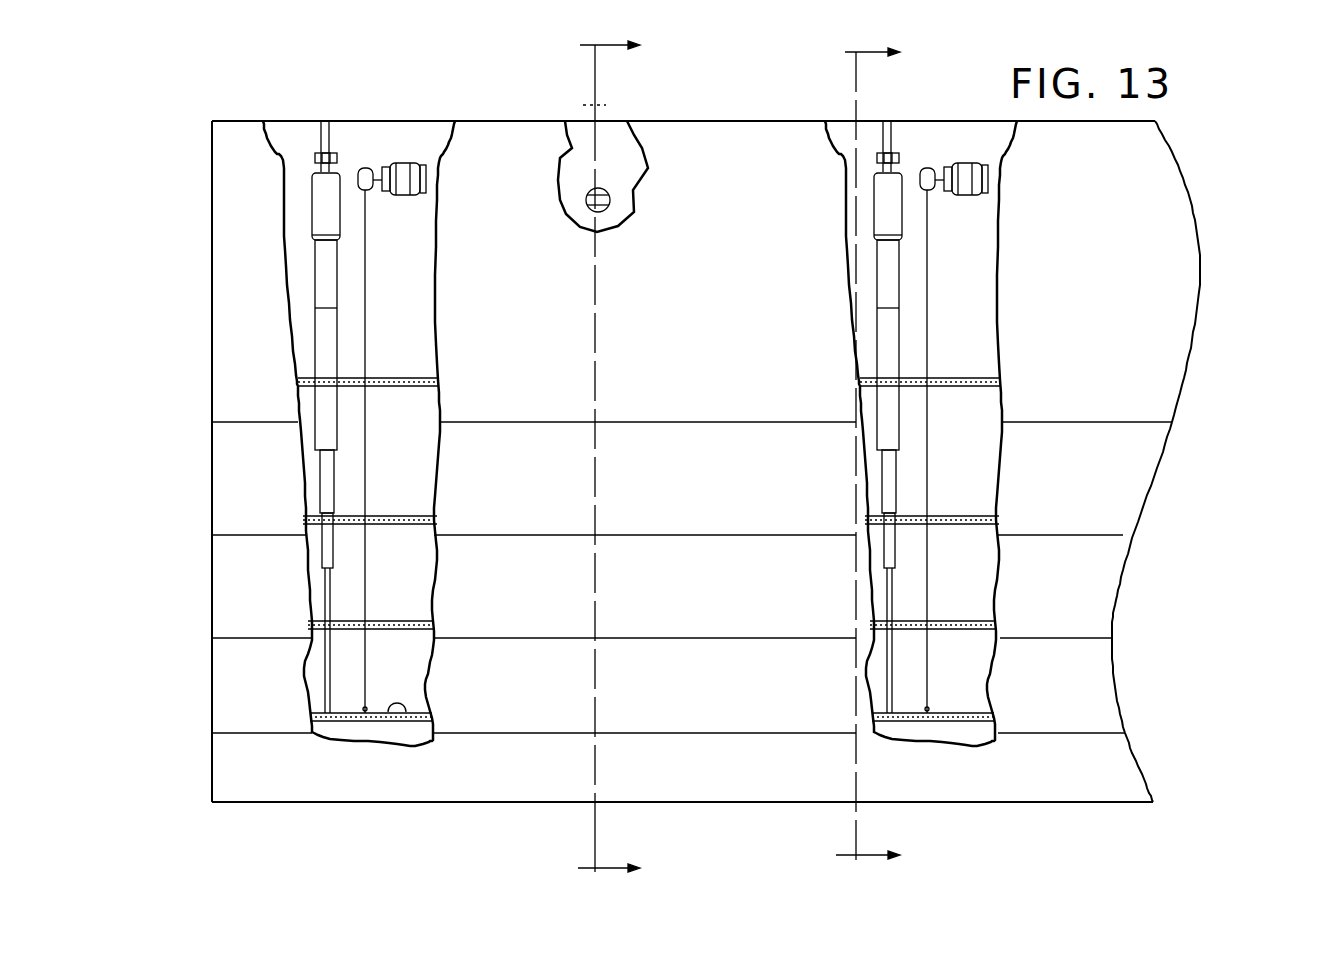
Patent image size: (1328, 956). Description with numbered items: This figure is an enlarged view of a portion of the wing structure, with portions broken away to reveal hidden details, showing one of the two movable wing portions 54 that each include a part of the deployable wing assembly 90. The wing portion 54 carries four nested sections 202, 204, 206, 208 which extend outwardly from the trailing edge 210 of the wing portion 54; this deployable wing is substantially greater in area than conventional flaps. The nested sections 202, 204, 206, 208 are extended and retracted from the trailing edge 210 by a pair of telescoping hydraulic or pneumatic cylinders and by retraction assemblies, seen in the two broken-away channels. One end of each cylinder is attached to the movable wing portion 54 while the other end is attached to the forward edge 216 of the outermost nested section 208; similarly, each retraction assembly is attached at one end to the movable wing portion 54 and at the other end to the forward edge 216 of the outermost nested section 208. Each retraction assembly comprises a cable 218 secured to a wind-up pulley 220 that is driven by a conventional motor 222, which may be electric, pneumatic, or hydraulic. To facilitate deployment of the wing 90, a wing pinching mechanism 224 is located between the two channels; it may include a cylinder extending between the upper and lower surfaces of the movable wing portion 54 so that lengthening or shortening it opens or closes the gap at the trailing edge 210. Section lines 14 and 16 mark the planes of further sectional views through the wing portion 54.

The section line 14 is at (626, 459).
The section line 16 is at (887, 456).
The movable wing portion 54 is at (745, 135).
The deployable wing assembly 90 is at (1173, 538).
The nested section 202 is at (1135, 475).
The nested section 204 is at (1113, 595).
The nested section 206 is at (1105, 688).
The outermost nested section 208 is at (1130, 770).
The trailing edge 210 is at (1115, 415).
The forward edge 216 is at (414, 722).
The cable 218 is at (363, 345).
The wind-up pulley 220 is at (368, 170).
The motor 222 is at (423, 154).
The wing pinching mechanism 224 is at (628, 182).